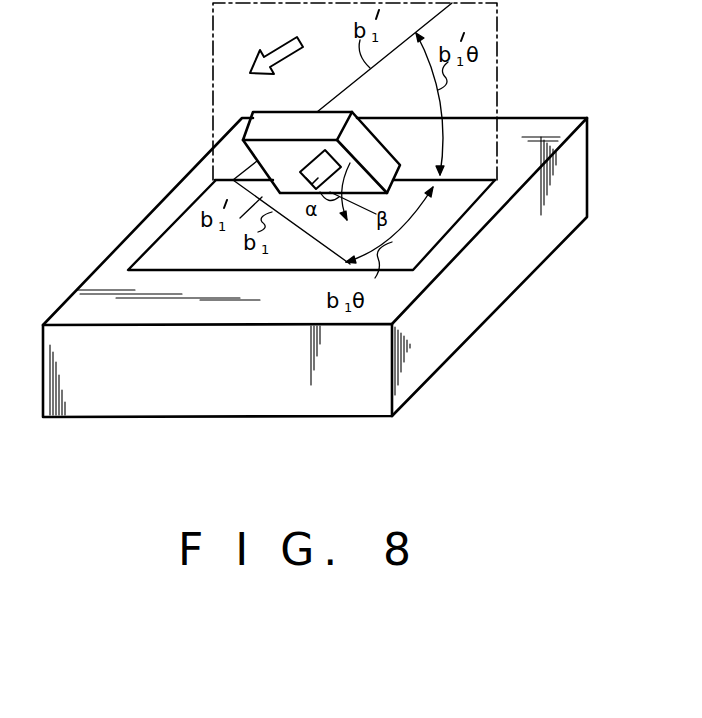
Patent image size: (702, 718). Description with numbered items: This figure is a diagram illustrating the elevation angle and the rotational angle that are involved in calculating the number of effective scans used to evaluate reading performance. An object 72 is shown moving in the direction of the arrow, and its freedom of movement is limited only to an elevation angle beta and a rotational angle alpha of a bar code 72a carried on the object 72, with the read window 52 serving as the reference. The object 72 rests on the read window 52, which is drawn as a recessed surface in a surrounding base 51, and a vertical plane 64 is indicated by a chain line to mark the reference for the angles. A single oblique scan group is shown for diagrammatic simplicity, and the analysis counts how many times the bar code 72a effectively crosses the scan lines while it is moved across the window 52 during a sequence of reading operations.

The base block 51 is at (483, 287).
The read window 52 is at (178, 238).
The reference plane 64 is at (225, 72).
The object 72 is at (308, 128).
The bar code 72a is at (300, 172).